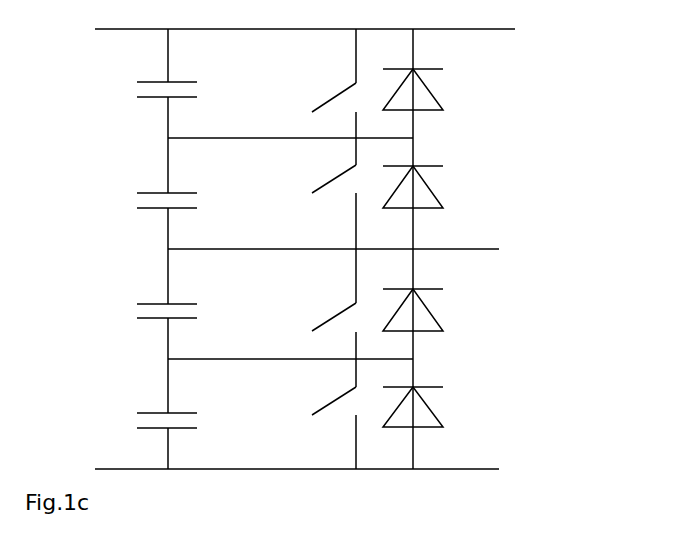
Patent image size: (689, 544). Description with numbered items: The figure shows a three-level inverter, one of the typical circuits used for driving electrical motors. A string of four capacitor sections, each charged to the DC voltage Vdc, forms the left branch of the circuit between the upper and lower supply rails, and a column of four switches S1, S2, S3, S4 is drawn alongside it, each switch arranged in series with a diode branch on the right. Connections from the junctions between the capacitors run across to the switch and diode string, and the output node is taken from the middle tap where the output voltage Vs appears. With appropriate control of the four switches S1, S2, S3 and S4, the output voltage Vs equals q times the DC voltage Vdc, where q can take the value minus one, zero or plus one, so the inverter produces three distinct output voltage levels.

The DC voltage Vdc is at (140, 249).
The switch S1 is at (312, 83).
The switch S2 is at (312, 193).
The switch S3 is at (312, 304).
The switch S4 is at (312, 414).
The output voltage Vs is at (361, 245).